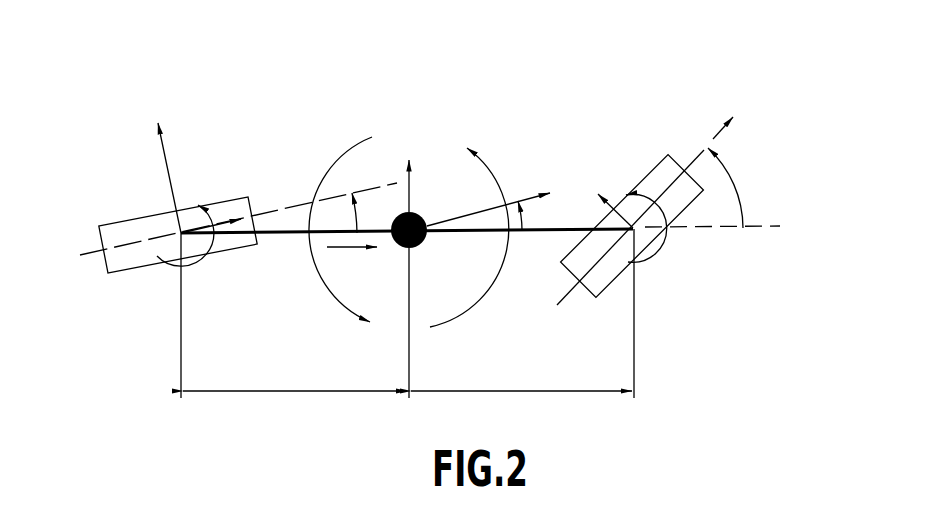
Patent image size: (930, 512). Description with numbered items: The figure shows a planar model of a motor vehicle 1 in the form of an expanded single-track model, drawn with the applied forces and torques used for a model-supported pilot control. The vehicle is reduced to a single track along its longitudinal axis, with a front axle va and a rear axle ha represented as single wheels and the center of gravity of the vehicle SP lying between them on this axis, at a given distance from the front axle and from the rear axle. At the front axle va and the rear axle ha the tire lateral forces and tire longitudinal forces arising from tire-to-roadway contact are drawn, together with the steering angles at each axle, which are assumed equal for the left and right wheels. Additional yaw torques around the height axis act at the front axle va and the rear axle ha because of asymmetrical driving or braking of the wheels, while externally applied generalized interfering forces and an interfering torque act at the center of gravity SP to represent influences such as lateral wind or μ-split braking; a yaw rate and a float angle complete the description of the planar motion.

The motor vehicle 1 is at (286, 108).
The rear axle ha is at (206, 183).
The front axle va is at (614, 156).
The center of gravity of the vehicle SP is at (417, 241).